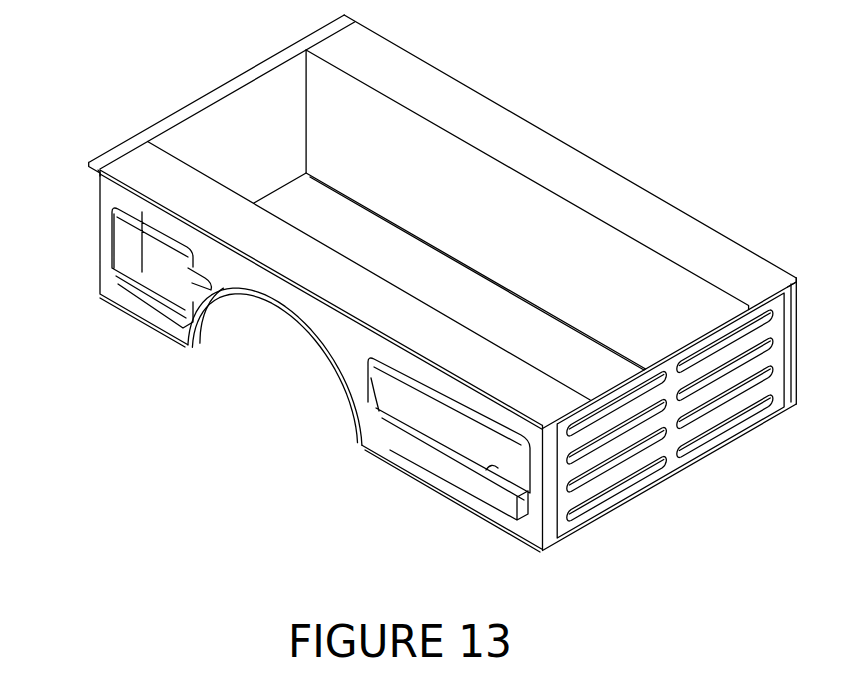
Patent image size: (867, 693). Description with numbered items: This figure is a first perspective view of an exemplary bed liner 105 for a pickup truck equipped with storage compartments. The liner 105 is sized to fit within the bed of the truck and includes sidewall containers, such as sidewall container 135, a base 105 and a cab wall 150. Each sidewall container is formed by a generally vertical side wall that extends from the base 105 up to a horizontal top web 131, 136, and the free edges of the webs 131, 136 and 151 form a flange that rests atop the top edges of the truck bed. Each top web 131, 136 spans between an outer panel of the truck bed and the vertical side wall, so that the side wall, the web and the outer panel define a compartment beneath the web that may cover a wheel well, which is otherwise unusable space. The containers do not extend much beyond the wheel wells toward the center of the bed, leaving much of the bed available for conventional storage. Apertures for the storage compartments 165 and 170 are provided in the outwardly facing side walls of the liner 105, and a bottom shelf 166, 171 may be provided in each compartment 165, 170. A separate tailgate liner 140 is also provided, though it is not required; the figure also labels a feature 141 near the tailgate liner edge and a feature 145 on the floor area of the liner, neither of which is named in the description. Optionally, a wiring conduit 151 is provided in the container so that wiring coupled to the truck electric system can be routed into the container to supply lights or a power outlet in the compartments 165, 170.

The bed liner 105 is at (257, 373).
The top web 131 is at (97, 173).
The sidewall container 135 is at (558, 166).
The top web 136 is at (796, 278).
The tailgate liner 140 is at (213, 115).
The top rail 141 is at (114, 145).
The floor 145 is at (307, 223).
The cab wall 150 is at (670, 445).
The wiring conduit 151 is at (568, 428).
The storage compartment 165 is at (143, 284).
The bottom shelf 166 is at (168, 322).
The storage compartment 170 is at (406, 403).
The bottom shelf 171 is at (497, 470).